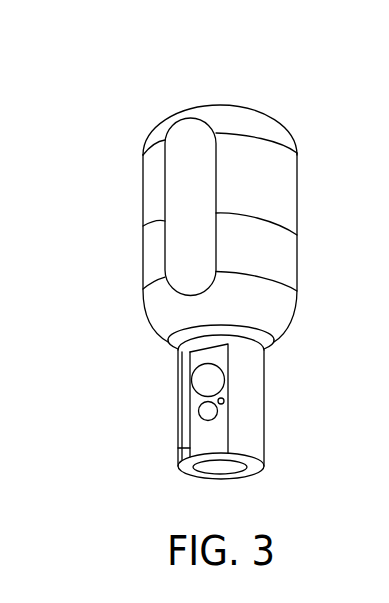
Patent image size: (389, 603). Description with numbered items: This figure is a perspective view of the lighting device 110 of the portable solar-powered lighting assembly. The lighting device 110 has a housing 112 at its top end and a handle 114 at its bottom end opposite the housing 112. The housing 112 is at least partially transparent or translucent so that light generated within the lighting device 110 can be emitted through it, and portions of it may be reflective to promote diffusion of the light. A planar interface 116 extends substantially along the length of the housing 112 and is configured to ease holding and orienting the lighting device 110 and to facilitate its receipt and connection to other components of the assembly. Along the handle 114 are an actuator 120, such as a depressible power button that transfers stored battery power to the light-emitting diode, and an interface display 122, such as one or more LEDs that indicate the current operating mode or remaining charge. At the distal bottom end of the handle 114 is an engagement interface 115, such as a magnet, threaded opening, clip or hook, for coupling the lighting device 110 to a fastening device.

The lighting device 110 is at (201, 279).
The housing 112 is at (289, 182).
The handle 114 is at (186, 449).
The engagement interface 115 is at (254, 498).
The planar interface 116 is at (206, 171).
The actuator 120 is at (186, 399).
The interface display 122 is at (220, 408).